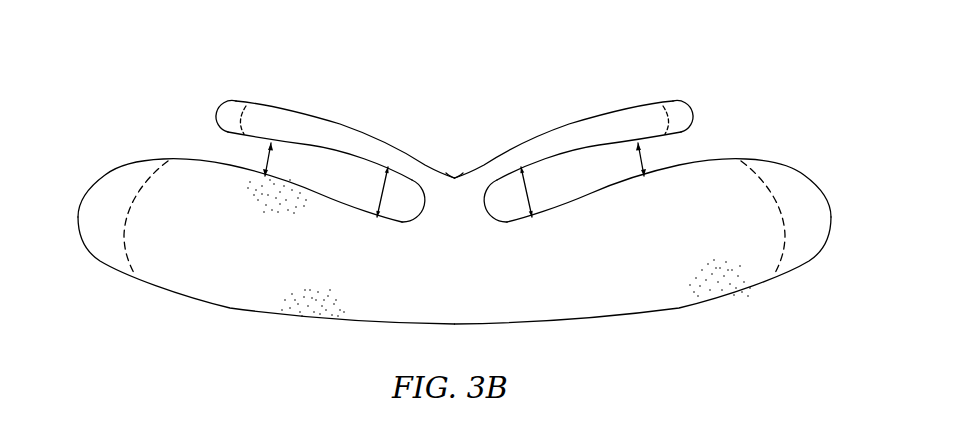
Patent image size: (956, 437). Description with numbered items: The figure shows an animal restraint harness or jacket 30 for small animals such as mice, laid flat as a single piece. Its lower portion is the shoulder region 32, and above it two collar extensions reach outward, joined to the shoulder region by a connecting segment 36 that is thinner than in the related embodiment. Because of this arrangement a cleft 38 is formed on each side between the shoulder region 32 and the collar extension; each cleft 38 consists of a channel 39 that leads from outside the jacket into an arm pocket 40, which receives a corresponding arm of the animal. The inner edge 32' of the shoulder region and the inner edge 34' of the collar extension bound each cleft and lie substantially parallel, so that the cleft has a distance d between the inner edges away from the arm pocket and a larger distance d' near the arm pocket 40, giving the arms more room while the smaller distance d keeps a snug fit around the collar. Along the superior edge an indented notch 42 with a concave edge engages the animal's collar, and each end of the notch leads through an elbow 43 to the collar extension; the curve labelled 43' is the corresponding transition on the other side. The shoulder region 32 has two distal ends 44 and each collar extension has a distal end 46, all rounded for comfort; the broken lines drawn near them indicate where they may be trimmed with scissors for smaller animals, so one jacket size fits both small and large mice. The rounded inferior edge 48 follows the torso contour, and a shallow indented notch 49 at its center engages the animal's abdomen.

The animal restraint harness or jacket 30 is at (210, 32).
The shoulder region 32 is at (454, 238).
The inner edge of shoulder region 32' is at (651, 204).
The inner edge of collar extension 34' is at (454, 137).
The connecting segment 36 is at (464, 208).
The cleft 38 is at (212, 148).
The channel 39 is at (305, 176).
The arm pocket 40 is at (417, 208).
The indented notch 42 is at (452, 172).
The elbow 43 is at (454, 135).
The curved transition of upper edge 43' is at (434, 133).
The distal end of shoulder region 44 is at (83, 195).
The distal end of collar extension 46 is at (219, 107).
The inferior edge 48 is at (625, 313).
The indented notch 49 is at (458, 326).
The distance d is at (454, 159).
The distance d' is at (453, 192).